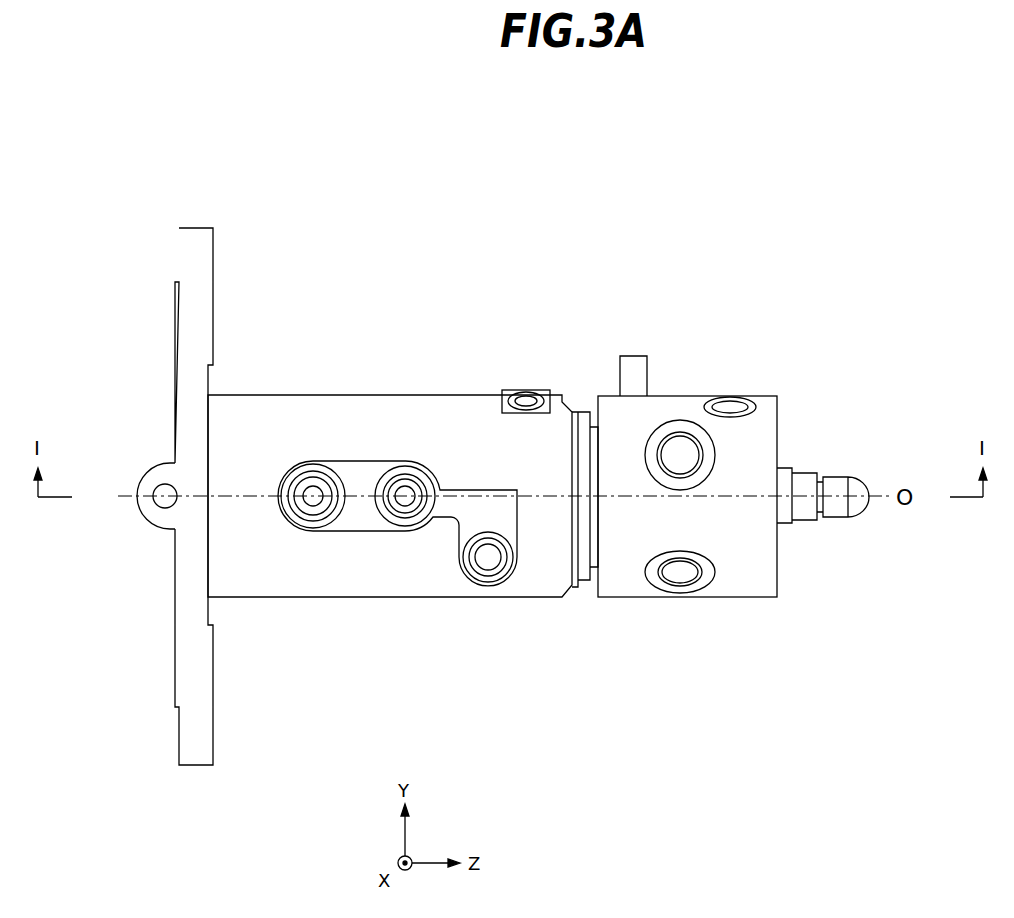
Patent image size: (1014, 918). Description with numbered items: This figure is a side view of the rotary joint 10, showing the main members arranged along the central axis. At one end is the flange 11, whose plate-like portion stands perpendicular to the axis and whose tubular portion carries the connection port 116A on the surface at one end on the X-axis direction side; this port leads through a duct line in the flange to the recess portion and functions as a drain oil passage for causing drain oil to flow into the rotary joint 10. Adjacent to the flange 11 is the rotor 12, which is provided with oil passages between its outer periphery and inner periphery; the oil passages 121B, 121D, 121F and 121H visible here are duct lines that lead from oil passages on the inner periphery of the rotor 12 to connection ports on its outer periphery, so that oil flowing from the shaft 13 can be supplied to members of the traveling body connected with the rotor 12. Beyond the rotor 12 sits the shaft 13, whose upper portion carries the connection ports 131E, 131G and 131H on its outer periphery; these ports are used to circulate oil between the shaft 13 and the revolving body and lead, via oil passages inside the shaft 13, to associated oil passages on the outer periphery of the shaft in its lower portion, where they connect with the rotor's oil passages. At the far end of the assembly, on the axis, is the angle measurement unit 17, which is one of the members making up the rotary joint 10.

The rotary joint 10 is at (757, 296).
The flange 11 is at (214, 300).
The connection port 116A is at (165, 505).
The rotor 12 is at (362, 395).
The oil passage 121B is at (297, 470).
The oil passage 121D is at (413, 470).
The oil passage 121F is at (485, 578).
The oil passage 121H is at (526, 392).
The shaft 13 is at (687, 396).
The connection port 131E is at (737, 397).
The connection port 131G is at (700, 438).
The connection port 131H is at (683, 575).
The angle measurement unit 17 is at (802, 522).